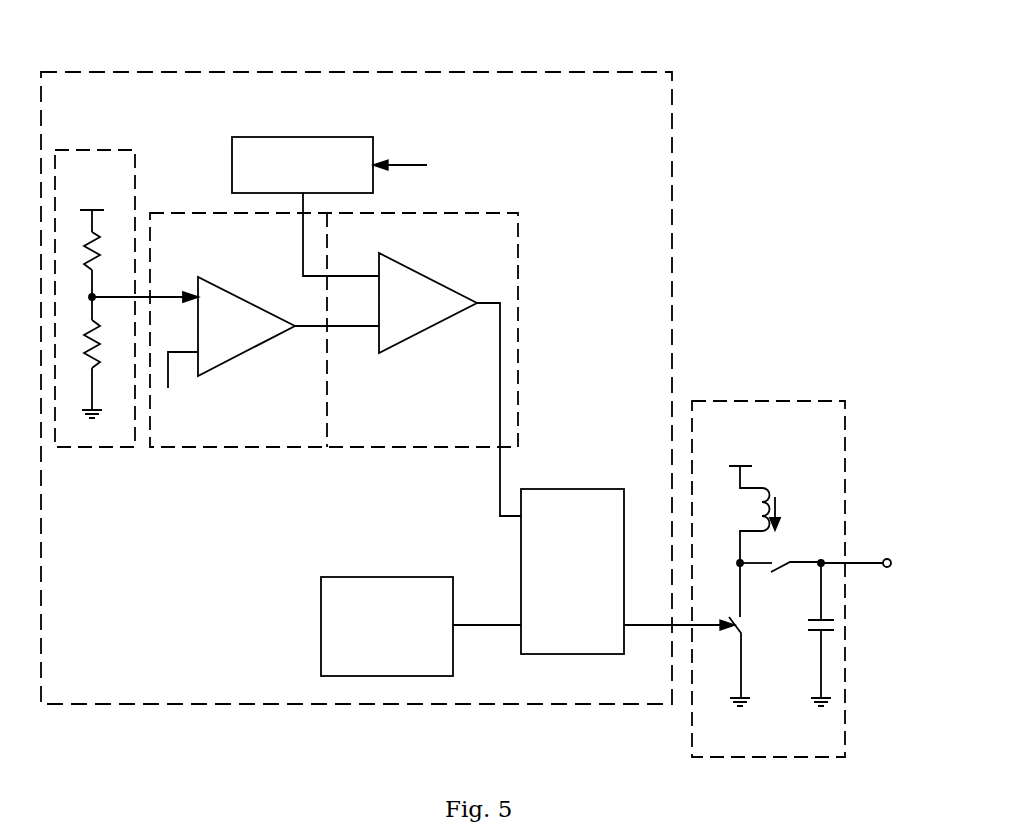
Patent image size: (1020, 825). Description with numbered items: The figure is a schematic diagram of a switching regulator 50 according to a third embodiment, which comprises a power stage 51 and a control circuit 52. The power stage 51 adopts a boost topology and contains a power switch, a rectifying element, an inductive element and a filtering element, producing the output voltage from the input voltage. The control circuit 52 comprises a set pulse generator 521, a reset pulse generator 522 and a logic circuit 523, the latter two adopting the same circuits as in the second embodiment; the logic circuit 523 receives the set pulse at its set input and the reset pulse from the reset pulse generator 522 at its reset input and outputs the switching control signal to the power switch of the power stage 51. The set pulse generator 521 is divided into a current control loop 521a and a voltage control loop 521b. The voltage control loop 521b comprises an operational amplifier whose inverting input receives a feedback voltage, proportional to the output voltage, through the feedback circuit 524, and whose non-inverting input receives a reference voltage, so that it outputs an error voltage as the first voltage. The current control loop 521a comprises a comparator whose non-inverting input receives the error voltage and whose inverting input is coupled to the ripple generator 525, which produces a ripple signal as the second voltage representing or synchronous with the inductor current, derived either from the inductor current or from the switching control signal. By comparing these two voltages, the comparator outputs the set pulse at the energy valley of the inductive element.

The switching regulator 50 is at (467, 381).
The power stage 51 is at (730, 401).
The control circuit 52 is at (621, 72).
The set pulse generator 521 is at (518, 225).
The current control loop 521a is at (378, 373).
The voltage control loop 521b is at (267, 330).
The reset pulse generator 522 is at (421, 626).
The logic circuit 523 is at (565, 489).
The feedback circuit 524 is at (110, 150).
The ripple generator 525 is at (369, 206).